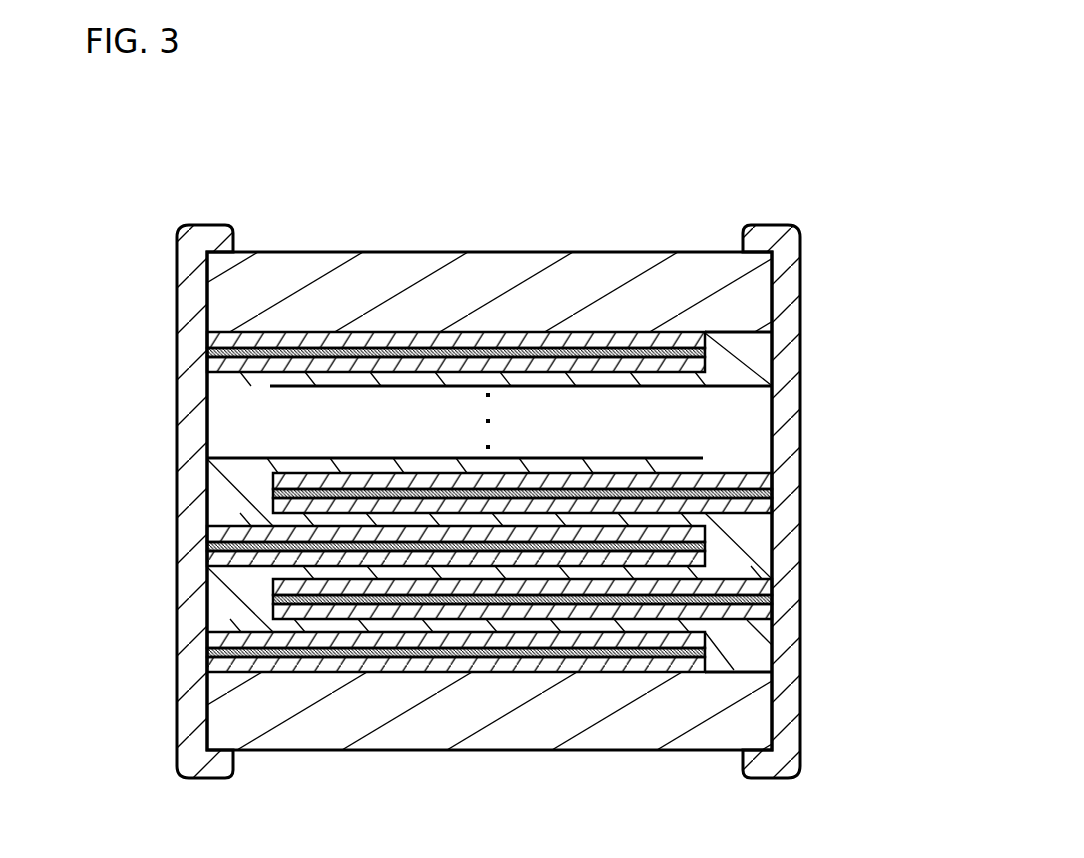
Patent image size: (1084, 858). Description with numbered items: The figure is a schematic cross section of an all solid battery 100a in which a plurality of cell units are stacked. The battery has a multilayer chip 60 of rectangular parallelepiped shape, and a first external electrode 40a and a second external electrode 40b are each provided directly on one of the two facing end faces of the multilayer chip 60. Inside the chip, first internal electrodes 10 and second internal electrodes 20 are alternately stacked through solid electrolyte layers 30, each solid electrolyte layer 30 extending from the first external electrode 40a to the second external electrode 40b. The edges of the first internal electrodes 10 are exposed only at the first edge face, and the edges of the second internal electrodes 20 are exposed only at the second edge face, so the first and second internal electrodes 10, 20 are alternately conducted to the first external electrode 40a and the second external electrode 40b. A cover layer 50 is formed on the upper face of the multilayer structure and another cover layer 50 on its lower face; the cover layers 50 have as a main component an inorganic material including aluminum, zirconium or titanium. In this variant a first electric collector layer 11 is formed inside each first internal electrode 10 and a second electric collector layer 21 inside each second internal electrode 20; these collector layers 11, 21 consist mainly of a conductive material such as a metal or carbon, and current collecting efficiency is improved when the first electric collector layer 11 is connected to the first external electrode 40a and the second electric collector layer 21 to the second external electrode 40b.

The all solid battery 100a is at (907, 160).
The multilayer chip 60 is at (616, 226).
The cover layer 50 is at (483, 275).
The solid electrolyte layer 30 is at (379, 625).
The first internal electrode 10 is at (217, 530).
The first electric collector layer 11 is at (215, 544).
The second internal electrode 20 is at (768, 578).
The second electric collector layer 21 is at (763, 600).
The first external electrode 40a is at (177, 365).
The second external electrode 40b is at (800, 363).